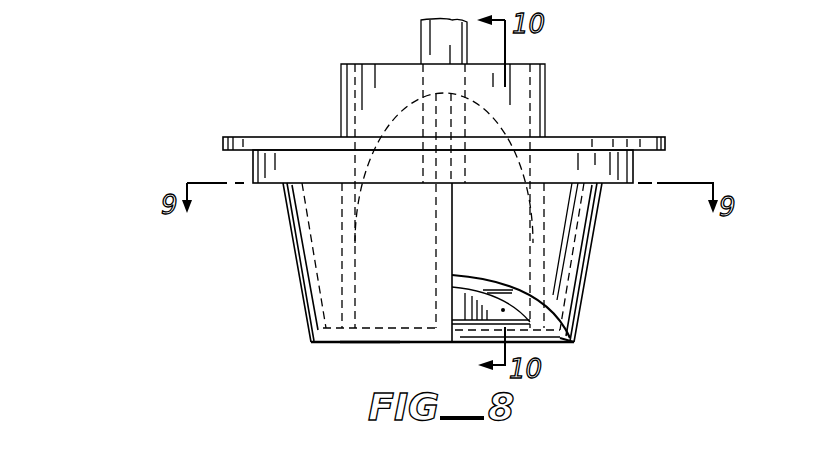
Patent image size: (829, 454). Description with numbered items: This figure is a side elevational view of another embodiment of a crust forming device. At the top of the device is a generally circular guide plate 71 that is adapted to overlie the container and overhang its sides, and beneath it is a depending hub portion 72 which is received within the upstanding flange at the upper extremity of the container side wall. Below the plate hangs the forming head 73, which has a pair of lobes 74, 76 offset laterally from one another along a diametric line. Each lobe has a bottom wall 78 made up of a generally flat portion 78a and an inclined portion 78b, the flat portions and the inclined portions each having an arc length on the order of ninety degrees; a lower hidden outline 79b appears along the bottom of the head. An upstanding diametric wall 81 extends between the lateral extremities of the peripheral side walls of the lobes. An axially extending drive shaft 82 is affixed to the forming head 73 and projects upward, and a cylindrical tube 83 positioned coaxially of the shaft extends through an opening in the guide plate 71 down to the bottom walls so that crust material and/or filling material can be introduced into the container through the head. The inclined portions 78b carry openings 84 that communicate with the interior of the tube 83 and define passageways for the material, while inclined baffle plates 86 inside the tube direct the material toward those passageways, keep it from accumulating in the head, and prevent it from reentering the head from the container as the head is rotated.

The guide plate 71 is at (278, 145).
The hub portion 72 is at (268, 186).
The forming head 73 is at (303, 344).
The lobe 74 is at (325, 277).
The lobe 76 is at (556, 293).
The bottom wall 78 is at (549, 350).
The flat portion of bottom wall 78a is at (375, 343).
The inclined portion of bottom wall 78b is at (561, 337).
The bottom recess 79b is at (407, 313).
The diametric wall 81 is at (427, 187).
The drive shaft 82 is at (440, 33).
The cylindrical tube 83 is at (546, 87).
The openings 84 is at (497, 315).
The inclined baffle plates 86 is at (405, 118).